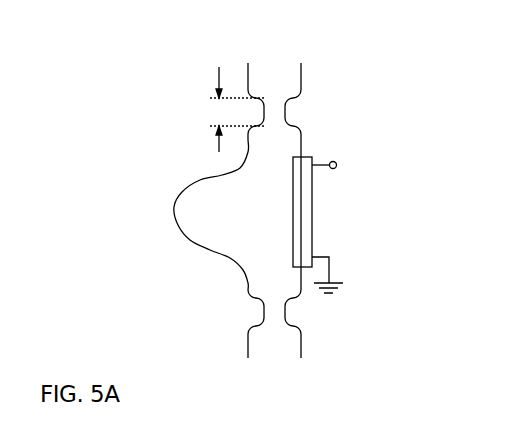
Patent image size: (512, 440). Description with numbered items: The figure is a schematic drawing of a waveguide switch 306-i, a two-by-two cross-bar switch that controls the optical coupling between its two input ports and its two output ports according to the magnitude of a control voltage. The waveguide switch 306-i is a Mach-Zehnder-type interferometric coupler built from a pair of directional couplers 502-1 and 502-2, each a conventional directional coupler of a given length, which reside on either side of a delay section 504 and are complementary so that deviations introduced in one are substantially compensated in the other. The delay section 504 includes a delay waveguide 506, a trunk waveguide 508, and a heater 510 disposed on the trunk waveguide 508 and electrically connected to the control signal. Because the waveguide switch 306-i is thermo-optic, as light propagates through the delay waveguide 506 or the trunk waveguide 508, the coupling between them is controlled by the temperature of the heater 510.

The waveguide switch 306-i is at (112, 83).
The directional coupler 502-1 is at (332, 92).
The directional coupler 502-2 is at (325, 322).
The delay section 504 is at (153, 230).
The delay waveguide 506 is at (187, 182).
The trunk waveguide 508 is at (302, 153).
The heater 510 is at (347, 224).